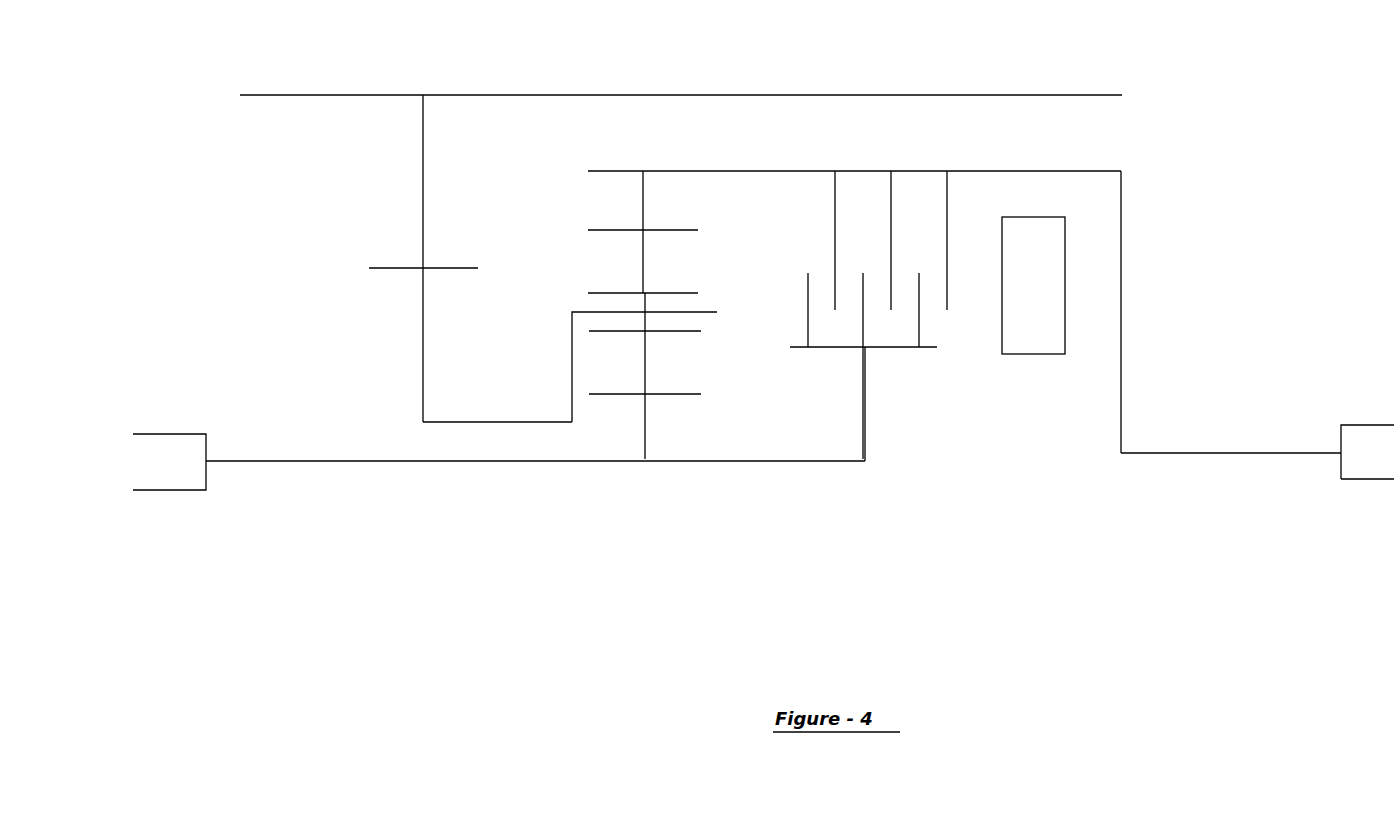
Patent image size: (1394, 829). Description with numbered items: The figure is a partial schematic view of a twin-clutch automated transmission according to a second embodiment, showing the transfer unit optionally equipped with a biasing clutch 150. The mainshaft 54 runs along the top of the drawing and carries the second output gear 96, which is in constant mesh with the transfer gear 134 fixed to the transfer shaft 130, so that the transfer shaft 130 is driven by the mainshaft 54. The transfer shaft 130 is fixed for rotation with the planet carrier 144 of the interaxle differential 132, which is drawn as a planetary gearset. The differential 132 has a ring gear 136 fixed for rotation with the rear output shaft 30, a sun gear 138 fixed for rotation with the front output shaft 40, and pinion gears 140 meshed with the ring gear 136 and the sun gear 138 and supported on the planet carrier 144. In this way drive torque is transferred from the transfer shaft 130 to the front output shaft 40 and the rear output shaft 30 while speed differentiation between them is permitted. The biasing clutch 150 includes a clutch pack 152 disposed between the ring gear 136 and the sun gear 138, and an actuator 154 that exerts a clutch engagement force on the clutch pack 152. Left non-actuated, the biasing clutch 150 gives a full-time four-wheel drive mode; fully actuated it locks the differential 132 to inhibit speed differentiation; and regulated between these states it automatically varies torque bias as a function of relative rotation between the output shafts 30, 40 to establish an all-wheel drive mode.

The mainshaft 54 is at (352, 95).
The second output gear 96 is at (423, 185).
The transfer gear 134 is at (423, 335).
The transfer shaft 130 is at (440, 422).
The planet carrier 144 is at (572, 365).
The interaxle differential 132 is at (688, 161).
The ring gear 136 is at (643, 208).
The pinion gears 140 is at (643, 262).
The sun gear 138 is at (645, 430).
The clutch pack 152 is at (952, 210).
The actuator 154 is at (1042, 256).
The biasing clutch 150 is at (1131, 200).
The front output shaft 40 is at (290, 462).
The rear output shaft 30 is at (1272, 454).